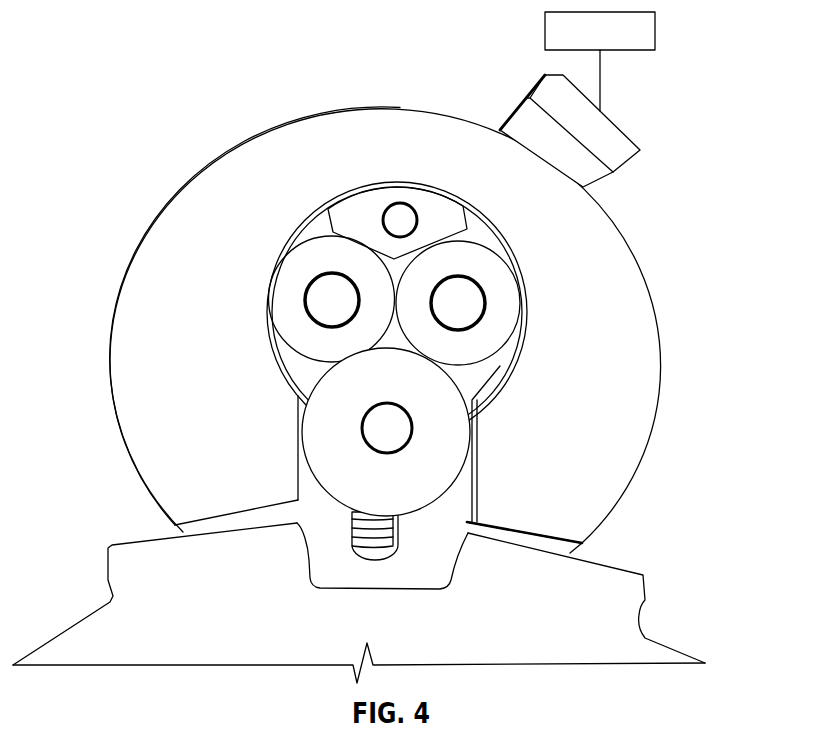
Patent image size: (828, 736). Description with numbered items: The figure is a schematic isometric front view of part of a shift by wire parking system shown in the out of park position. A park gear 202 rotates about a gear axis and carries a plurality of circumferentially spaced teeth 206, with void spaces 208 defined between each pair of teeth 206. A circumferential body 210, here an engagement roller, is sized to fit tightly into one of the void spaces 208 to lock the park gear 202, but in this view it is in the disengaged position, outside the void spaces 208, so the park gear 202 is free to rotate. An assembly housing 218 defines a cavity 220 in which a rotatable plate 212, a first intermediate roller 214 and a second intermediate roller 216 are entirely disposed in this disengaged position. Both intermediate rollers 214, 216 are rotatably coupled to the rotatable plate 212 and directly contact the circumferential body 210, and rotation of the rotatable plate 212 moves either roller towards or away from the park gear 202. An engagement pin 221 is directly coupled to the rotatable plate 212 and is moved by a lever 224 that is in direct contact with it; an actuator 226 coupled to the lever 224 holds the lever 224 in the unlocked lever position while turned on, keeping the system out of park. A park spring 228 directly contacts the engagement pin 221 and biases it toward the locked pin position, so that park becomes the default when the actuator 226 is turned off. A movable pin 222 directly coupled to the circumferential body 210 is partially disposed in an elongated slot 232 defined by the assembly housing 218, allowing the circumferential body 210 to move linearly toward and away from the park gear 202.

The park gear 202 is at (612, 647).
The teeth 206 is at (143, 538).
The void spaces 208 is at (400, 588).
The circumferential body 210 is at (480, 435).
The rotatable plate 212 is at (450, 213).
The first intermediate roller 214 is at (282, 294).
The second intermediate roller 216 is at (512, 303).
The assembly housing 218 is at (277, 146).
The cavity 220 is at (497, 368).
The engagement pin 221 is at (396, 212).
The movable pin 222 is at (377, 438).
The lever 224 is at (618, 155).
The actuator 226 is at (655, 31).
The park spring 228 is at (368, 513).
The elongated slot 232 is at (368, 530).